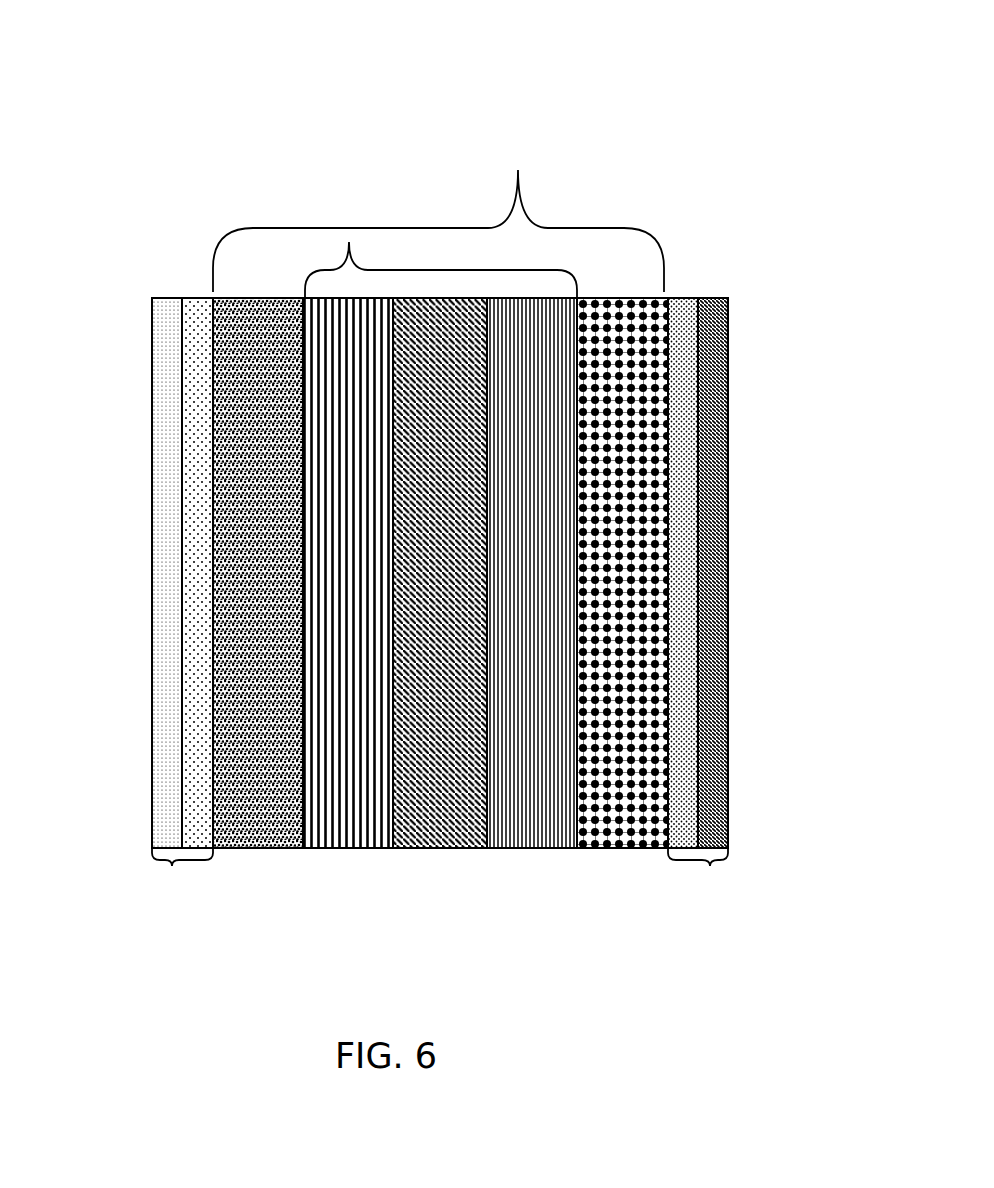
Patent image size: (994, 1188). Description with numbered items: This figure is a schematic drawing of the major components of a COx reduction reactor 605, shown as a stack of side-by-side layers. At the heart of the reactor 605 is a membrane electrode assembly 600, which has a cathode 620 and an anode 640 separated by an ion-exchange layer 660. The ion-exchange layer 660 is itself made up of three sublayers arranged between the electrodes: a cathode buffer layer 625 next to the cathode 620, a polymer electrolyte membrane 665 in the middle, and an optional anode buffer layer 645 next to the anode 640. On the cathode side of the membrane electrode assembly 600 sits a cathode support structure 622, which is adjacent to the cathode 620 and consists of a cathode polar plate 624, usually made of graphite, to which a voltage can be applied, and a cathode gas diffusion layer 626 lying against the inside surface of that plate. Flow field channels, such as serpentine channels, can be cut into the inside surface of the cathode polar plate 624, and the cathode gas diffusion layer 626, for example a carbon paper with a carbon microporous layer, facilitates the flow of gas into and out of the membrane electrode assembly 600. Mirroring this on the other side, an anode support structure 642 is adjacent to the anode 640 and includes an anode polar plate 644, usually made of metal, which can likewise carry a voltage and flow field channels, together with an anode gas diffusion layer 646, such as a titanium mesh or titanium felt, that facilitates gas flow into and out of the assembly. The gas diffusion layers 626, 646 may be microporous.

The COx reduction reactor 605 is at (244, 118).
The membrane electrode assembly 600 is at (440, 486).
The ion-exchange layer 660 is at (349, 242).
The cathode support structure 622 is at (172, 866).
The cathode polar plate 624 is at (173, 518).
The cathode gas diffusion layer 626 is at (199, 372).
The cathode 620 is at (270, 798).
The cathode buffer layer 625 is at (357, 792).
The polymer electrolyte membrane 665 is at (430, 795).
The anode buffer layer 645 is at (513, 795).
The anode 640 is at (595, 790).
The anode gas diffusion layer 646 is at (682, 382).
The anode polar plate 644 is at (707, 535).
The anode support structure 642 is at (710, 866).